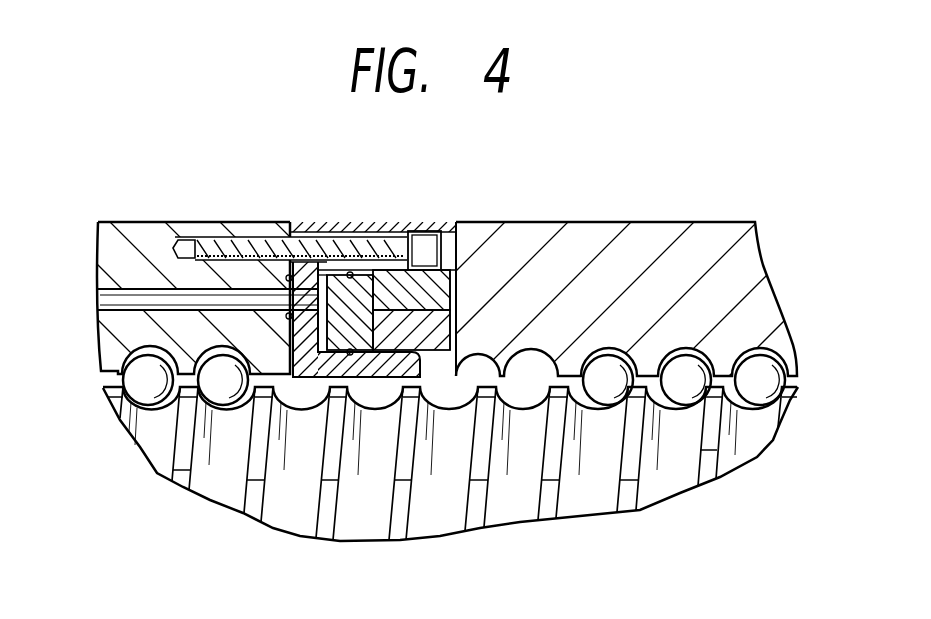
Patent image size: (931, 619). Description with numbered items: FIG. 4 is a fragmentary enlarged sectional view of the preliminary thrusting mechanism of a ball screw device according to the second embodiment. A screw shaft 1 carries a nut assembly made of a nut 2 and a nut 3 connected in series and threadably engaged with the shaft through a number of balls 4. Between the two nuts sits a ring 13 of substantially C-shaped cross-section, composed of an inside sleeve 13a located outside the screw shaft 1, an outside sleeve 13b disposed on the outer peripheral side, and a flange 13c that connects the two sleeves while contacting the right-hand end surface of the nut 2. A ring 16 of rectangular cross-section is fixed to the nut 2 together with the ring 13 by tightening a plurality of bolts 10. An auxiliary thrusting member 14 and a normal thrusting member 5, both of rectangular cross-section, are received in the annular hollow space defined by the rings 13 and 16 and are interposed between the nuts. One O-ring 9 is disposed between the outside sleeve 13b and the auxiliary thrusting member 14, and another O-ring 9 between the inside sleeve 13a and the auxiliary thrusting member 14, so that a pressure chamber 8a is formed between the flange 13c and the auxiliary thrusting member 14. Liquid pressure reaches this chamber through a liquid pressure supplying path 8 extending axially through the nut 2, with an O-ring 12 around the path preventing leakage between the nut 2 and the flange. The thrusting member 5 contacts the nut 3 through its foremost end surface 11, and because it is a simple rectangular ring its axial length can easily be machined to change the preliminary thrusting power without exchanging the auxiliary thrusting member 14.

The screw shaft 1 is at (594, 512).
The nut 2 is at (120, 247).
The nut 3 is at (657, 233).
The balls 4 is at (789, 361).
The thrusting member 5 is at (437, 333).
The liquid pressure supplying path 8 is at (97, 297).
The pressure chamber 8a is at (322, 268).
The O-ring 9 is at (357, 362).
The bolts 10 is at (428, 232).
The foremost end surface 11 is at (456, 347).
The O-ring 12 is at (280, 222).
The ring 13 is at (318, 378).
The inside sleeve 13a is at (392, 362).
The outside sleeve 13b is at (348, 270).
The flange 13c is at (292, 325).
The auxiliary thrusting member 14 is at (367, 270).
The ring 16 is at (440, 287).